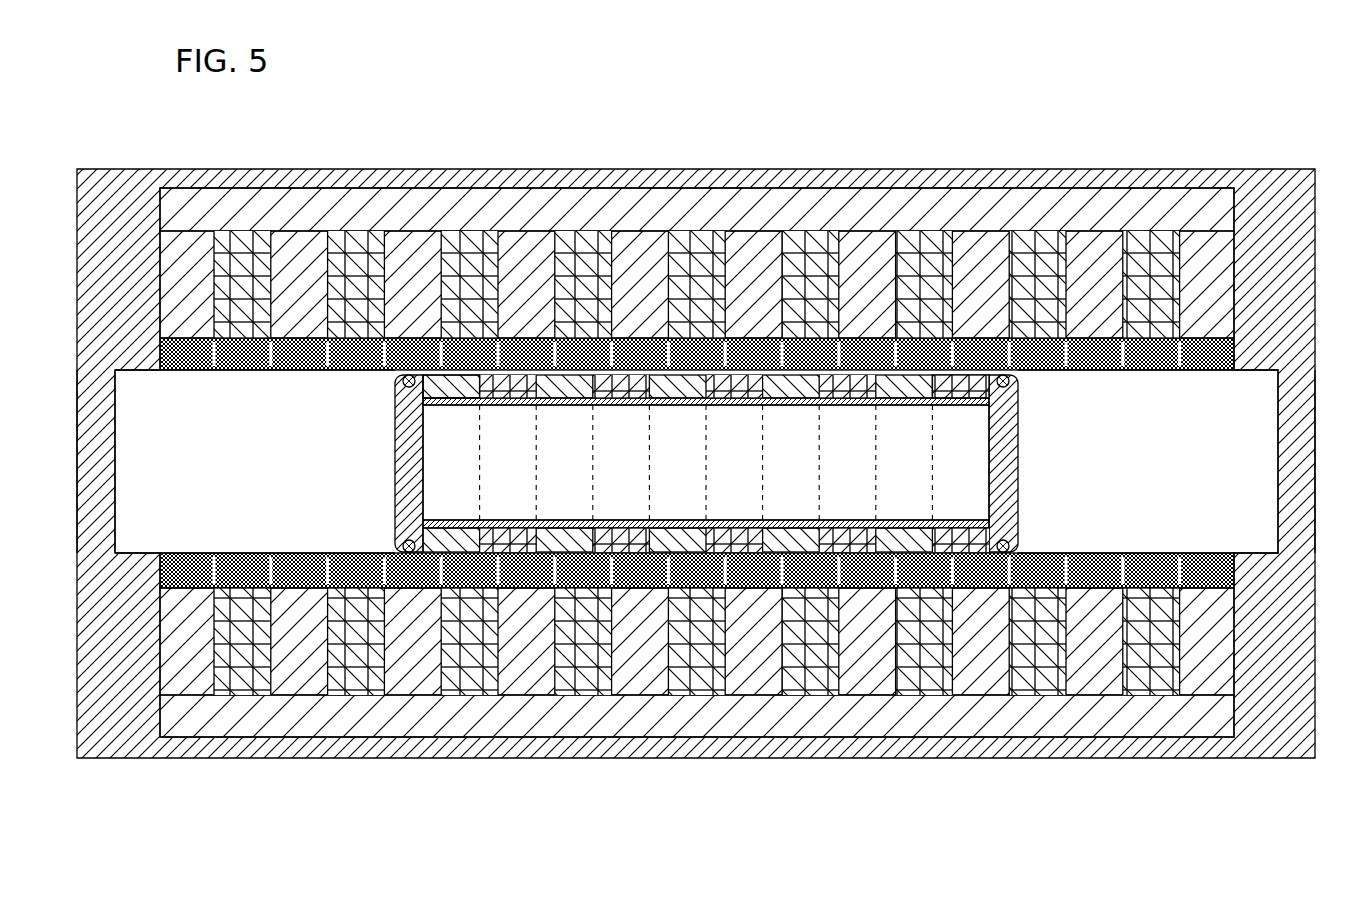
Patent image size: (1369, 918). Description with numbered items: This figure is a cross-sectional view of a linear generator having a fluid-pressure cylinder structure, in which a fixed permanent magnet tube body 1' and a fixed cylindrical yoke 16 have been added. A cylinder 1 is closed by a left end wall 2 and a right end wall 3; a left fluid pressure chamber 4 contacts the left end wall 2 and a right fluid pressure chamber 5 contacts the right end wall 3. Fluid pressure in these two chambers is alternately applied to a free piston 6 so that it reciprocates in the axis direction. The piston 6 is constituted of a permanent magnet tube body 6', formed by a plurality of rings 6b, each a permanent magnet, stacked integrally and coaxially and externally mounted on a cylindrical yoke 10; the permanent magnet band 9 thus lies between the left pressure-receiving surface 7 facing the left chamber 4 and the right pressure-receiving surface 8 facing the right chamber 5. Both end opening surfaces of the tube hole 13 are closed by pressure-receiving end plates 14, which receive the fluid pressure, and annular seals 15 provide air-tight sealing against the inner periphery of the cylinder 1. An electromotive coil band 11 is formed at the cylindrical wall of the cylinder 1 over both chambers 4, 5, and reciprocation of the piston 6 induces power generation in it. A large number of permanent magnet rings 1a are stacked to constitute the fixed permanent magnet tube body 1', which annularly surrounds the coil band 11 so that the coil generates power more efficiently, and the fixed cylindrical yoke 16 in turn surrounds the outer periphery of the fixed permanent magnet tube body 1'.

The cylinder 1 is at (696, 439).
The fixed permanent magnet tube body 1' is at (697, 408).
The permanent magnet ring 1a is at (343, 238).
The left end wall 2 is at (95, 455).
The right end wall 3 is at (1300, 462).
The left fluid pressure chamber 4 is at (251, 478).
The right fluid pressure chamber 5 is at (1151, 478).
The piston 6 is at (697, 245).
The permanent magnet tube body 6' is at (697, 570).
The ring 6b is at (513, 340).
The left pressure-receiving surface 7 is at (395, 420).
The right pressure-receiving surface 8 is at (1018, 420).
The permanent magnet band 9 is at (424, 758).
The cylindrical yoke 10 is at (836, 372).
The electromotive coil band 11 is at (160, 758).
The tube hole 13 is at (901, 430).
The pressure-receiving end plate 14 is at (400, 490).
The annular seal 15 is at (400, 340).
The fixed cylindrical yoke 16 is at (236, 200).